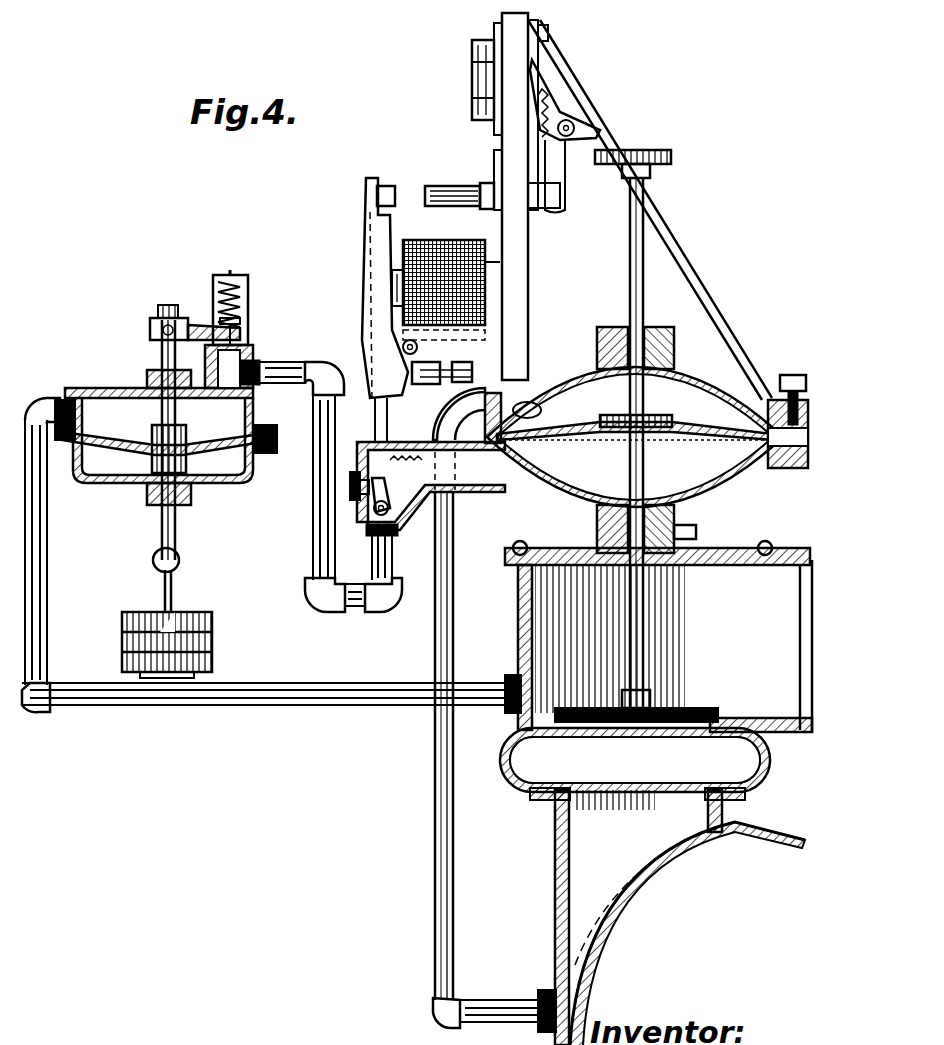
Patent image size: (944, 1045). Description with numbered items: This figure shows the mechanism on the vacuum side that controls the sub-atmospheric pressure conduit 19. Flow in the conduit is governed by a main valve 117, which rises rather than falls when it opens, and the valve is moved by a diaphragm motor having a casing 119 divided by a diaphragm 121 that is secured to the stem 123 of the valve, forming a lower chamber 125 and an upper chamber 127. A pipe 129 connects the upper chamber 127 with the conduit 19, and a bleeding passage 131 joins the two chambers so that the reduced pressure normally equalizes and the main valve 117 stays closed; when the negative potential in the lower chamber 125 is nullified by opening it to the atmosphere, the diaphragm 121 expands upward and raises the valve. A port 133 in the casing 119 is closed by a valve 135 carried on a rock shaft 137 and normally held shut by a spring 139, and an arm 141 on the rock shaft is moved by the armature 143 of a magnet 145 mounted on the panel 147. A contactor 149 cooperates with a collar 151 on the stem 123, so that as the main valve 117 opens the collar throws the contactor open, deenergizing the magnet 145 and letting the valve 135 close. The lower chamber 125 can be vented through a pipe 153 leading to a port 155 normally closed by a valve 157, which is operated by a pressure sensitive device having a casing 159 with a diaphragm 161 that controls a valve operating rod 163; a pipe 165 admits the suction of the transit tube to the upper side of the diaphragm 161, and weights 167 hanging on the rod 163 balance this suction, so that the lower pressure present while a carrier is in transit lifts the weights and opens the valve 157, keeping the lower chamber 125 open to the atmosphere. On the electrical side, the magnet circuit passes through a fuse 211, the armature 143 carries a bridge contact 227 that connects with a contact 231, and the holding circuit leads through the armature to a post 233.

The sub-atmospheric pressure conduit 19 is at (770, 838).
The main valve 117 is at (688, 708).
The casing 119 is at (706, 502).
The diaphragm 121 is at (708, 433).
The stem 123 is at (630, 302).
The lower chamber 125 is at (581, 468).
The upper chamber 127 is at (618, 409).
The pipe 129 is at (435, 658).
The bleeding passage 131 is at (792, 450).
The port 133 is at (384, 478).
The valve 135 is at (355, 500).
The rock shaft 137 is at (398, 520).
The spring 139 is at (413, 430).
The arm 141 is at (375, 401).
The armature 143 is at (370, 310).
The magnet 145 is at (448, 232).
The panel 147 is at (528, 238).
The contactor 149 is at (585, 135).
The collar 151 is at (672, 160).
The pipe 153 is at (313, 546).
The port 155 is at (248, 362).
The valve 157 is at (240, 340).
The casing 159 is at (200, 480).
The diaphragm 161 is at (205, 442).
The valve operating rod 163 is at (160, 353).
The pipe 165 is at (296, 683).
The weights 167 is at (212, 628).
The fuse 211 is at (472, 77).
The bridge contact 227 is at (386, 186).
The contact 231 is at (425, 188).
The post 233 is at (470, 353).